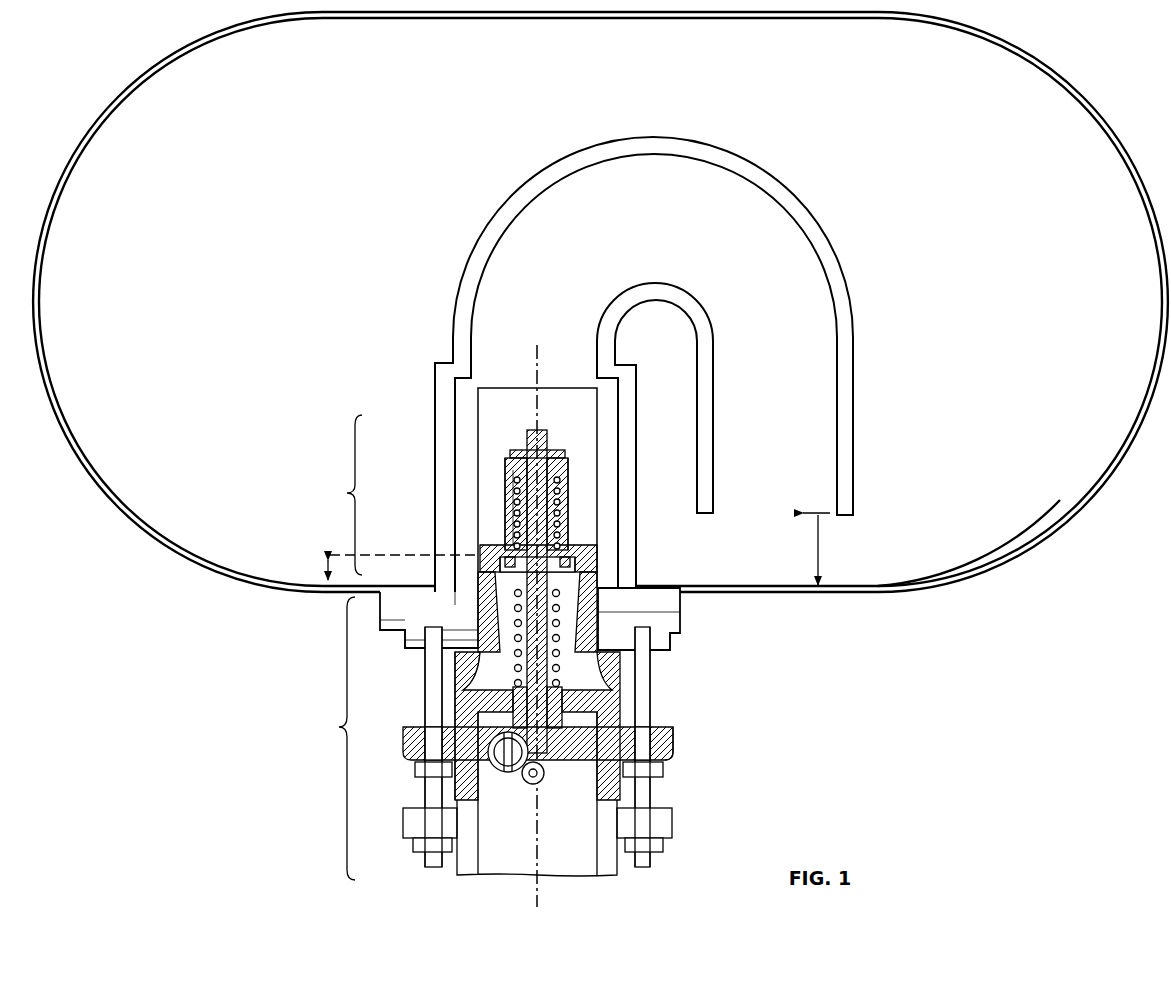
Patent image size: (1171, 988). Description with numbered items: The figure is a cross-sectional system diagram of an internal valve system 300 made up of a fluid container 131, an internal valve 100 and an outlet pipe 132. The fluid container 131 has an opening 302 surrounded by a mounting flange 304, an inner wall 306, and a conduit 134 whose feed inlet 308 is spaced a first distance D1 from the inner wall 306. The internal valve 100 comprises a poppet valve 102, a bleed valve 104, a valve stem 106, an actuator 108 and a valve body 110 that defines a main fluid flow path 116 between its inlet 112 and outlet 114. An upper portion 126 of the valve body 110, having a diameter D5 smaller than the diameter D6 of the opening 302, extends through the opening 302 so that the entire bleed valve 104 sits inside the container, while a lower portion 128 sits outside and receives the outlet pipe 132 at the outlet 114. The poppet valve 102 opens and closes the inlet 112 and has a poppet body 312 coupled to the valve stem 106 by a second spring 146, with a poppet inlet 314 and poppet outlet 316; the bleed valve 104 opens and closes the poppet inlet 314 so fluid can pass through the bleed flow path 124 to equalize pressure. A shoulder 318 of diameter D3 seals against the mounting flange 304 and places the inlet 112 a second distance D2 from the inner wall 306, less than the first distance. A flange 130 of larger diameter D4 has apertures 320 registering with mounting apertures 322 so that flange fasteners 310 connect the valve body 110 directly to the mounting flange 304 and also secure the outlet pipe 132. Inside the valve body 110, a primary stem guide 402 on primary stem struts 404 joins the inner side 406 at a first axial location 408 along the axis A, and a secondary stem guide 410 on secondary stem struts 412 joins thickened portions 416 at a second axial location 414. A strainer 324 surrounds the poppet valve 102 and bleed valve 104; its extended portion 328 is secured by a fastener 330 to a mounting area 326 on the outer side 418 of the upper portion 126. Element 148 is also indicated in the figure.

The internal valve 100 is at (476, 448).
The poppet valve 102 is at (472, 543).
The bleed valve 104 is at (552, 446).
The valve stem 106 is at (478, 612).
The actuator 108 is at (488, 808).
The valve body 110 is at (563, 700).
The inlet 112 is at (714, 514).
The outlet 114 is at (573, 805).
The main fluid flow path 116 is at (600, 582).
The bleed flow path 124 is at (567, 502).
The upper portion 126 is at (332, 495).
The lower portion 128 is at (321, 738).
The flange 130 is at (674, 745).
The fluid container 131 is at (975, 590).
The outlet pipe 132 is at (615, 870).
The conduit 134 is at (855, 316).
The second spring 146 is at (495, 752).
The valve member 148 is at (506, 495).
The internal valve system 300 is at (183, 580).
The opening 302 is at (605, 604).
The mounting flange 304 is at (605, 624).
The inner wall 306 is at (640, 590).
The feed inlet 308 is at (848, 517).
The flange fasteners 310 is at (433, 712).
The poppet body 312 is at (569, 470).
The poppet inlet 314 is at (562, 453).
The poppet outlet 316 is at (585, 548).
The shoulder 318 is at (452, 672).
The apertures 320 is at (415, 766).
The mounting apertures 322 is at (480, 606).
The strainer 324 is at (507, 392).
The mounting area 326 is at (472, 565).
The extended portion 328 is at (478, 640).
The fastener 330 is at (600, 612).
The primary stem guide 402 is at (403, 740).
The primary stem struts 404 is at (590, 700).
The inner side 406 is at (490, 685).
The first axial location 408 is at (560, 725).
The secondary stem guide 410 is at (600, 594).
The secondary stem struts 412 is at (478, 600).
The second axial location 414 is at (505, 537).
The thickened portions 416 is at (605, 630).
The outer side 418 is at (478, 625).
The first distance D1 is at (383, 568).
The second distance D2 is at (808, 549).
The shoulder diameter D3 is at (624, 669).
The flange diameter D4 is at (684, 725).
The upper portion diameter D5 is at (603, 563).
The opening diameter D6 is at (630, 598).
The axis A is at (537, 920).